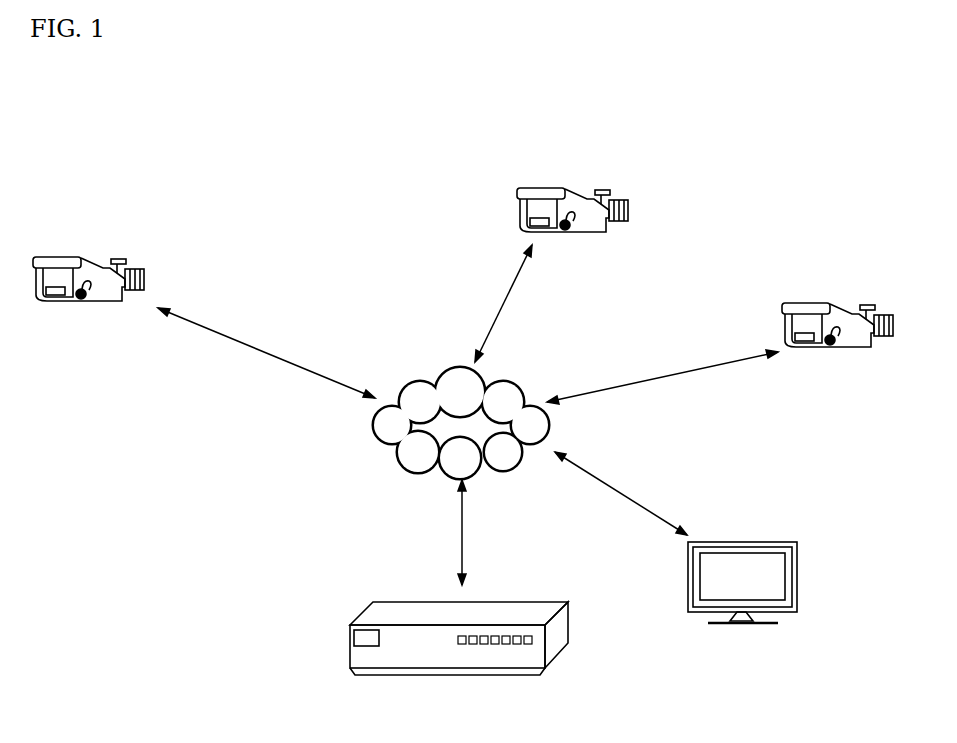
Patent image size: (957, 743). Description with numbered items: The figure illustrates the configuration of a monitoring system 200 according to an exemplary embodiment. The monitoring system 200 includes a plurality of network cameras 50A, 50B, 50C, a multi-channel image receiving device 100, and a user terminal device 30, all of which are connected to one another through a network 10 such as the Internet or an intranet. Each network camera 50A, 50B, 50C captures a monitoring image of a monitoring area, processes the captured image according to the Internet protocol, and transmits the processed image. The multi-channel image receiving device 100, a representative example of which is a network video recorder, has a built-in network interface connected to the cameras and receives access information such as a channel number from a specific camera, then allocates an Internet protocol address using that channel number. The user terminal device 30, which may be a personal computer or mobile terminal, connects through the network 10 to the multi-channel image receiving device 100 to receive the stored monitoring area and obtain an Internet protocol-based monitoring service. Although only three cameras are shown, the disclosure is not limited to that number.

The monitoring system 200 is at (462, 80).
The network 10 is at (510, 382).
The network camera 50A is at (77, 256).
The network camera 50B is at (574, 188).
The network camera 50C is at (828, 303).
The user terminal device 30 is at (780, 542).
The multi-channel image receiving device 100 is at (543, 602).